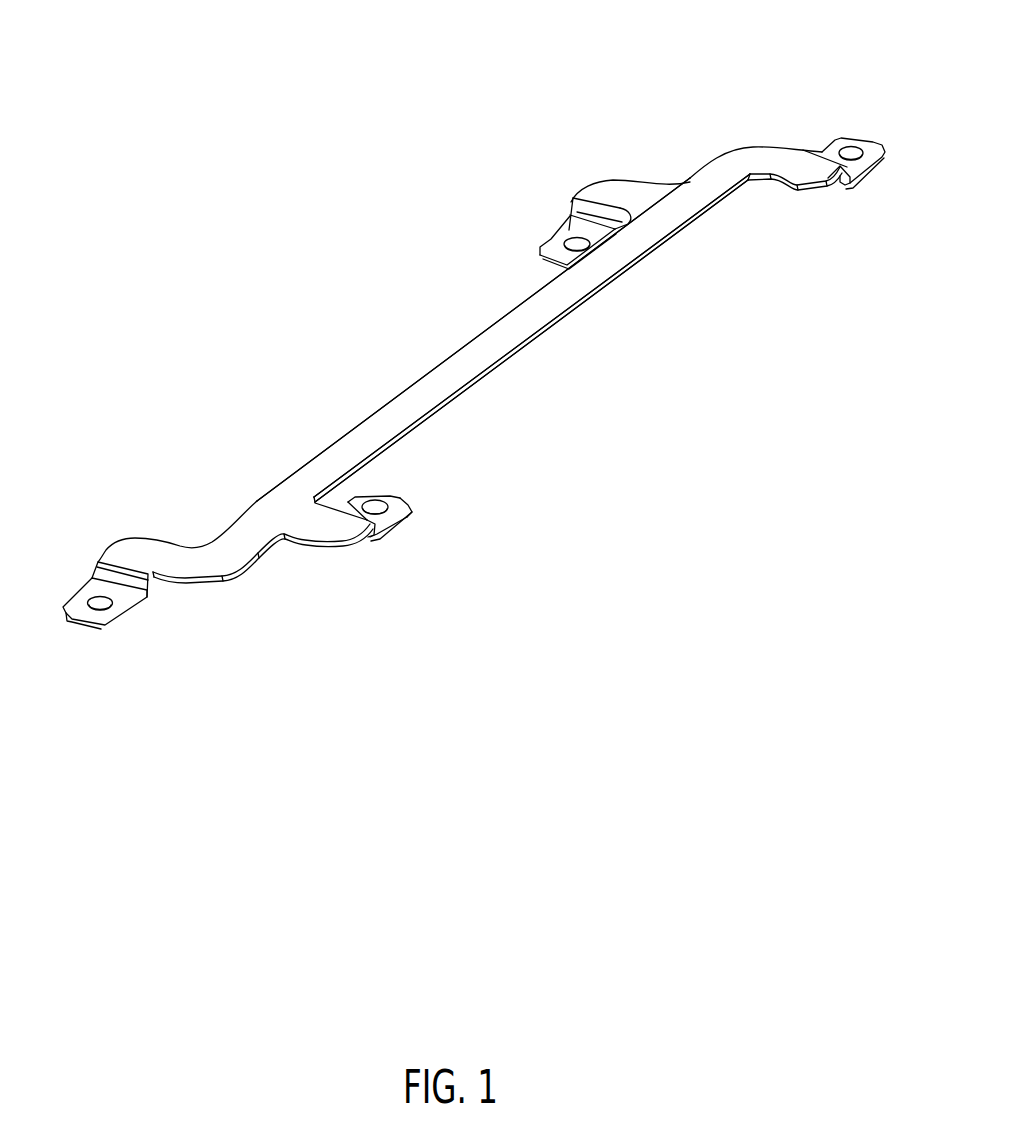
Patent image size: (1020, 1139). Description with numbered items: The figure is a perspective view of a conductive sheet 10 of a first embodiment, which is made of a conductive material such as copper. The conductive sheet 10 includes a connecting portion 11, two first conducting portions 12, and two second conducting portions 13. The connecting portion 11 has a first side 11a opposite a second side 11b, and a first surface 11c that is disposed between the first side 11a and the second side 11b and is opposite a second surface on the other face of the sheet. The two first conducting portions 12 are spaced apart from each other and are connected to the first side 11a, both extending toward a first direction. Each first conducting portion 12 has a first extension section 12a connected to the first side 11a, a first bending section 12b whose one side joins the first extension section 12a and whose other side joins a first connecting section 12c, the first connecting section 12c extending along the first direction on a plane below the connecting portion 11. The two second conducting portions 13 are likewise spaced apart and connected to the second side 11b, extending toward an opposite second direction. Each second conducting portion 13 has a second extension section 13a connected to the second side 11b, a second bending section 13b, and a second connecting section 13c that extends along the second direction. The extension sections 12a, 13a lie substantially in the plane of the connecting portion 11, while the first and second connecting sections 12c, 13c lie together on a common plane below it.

The conductive sheet 10 is at (139, 299).
The connecting portion 11 is at (373, 425).
The first side 11a is at (510, 312).
The second side 11b is at (557, 323).
The first surface 11c is at (607, 265).
The first conducting portion 12 is at (124, 528).
The first extension section 12a is at (617, 195).
The first bending section 12b is at (593, 220).
The first connecting section 12c is at (547, 237).
The second conducting portion 13 is at (841, 197).
The second extension section 13a is at (340, 523).
The second bending section 13b is at (375, 537).
The second connecting section 13c is at (400, 510).